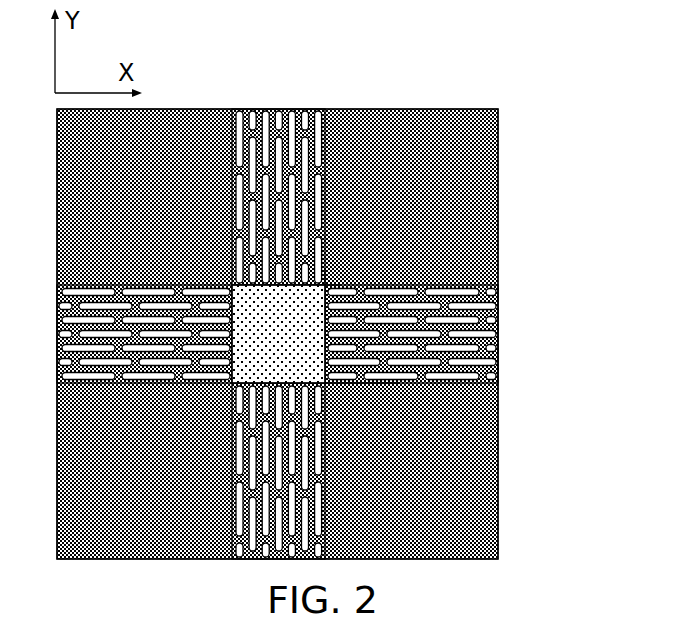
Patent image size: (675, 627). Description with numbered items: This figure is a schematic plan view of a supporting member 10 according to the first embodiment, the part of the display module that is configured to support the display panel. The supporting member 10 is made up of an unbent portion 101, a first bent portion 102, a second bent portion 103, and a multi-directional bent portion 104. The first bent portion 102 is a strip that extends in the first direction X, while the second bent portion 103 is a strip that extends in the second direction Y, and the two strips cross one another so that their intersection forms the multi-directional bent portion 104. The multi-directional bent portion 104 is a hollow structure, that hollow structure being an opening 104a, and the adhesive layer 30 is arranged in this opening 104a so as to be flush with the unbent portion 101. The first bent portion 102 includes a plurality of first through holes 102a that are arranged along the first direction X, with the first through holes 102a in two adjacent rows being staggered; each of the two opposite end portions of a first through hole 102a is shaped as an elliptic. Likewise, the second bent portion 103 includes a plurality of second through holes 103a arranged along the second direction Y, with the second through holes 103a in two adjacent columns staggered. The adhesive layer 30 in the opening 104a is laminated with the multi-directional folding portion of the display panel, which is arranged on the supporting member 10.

The supporting member 10 is at (467, 80).
The unbent portion 101 is at (175, 108).
The first bent portion 102 is at (497, 315).
The first through holes 102a is at (468, 343).
The second bent portion 103 is at (268, 110).
The second through holes 103a is at (320, 112).
The multi-directional bent portion 104 is at (322, 280).
The opening 104a is at (353, 383).
The adhesive layer 30 is at (312, 333).